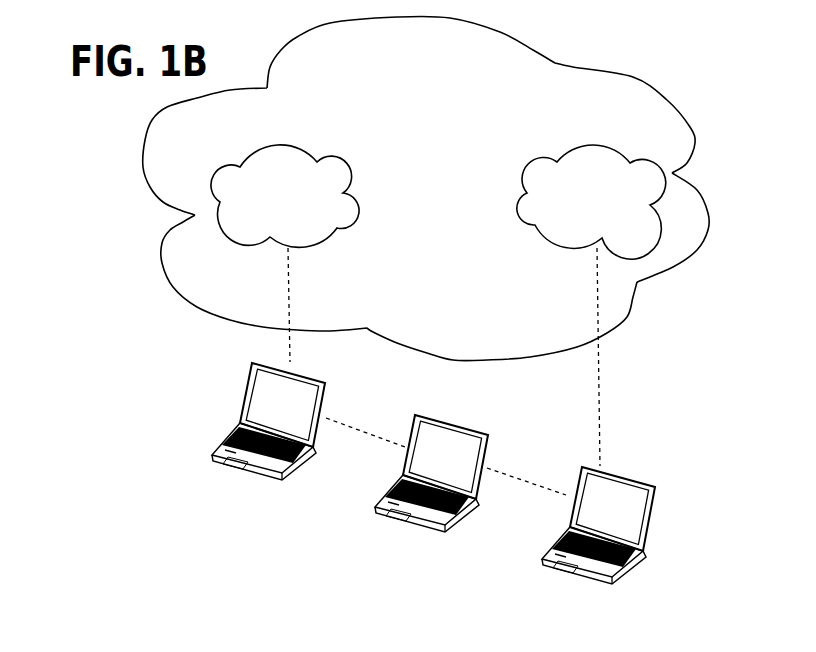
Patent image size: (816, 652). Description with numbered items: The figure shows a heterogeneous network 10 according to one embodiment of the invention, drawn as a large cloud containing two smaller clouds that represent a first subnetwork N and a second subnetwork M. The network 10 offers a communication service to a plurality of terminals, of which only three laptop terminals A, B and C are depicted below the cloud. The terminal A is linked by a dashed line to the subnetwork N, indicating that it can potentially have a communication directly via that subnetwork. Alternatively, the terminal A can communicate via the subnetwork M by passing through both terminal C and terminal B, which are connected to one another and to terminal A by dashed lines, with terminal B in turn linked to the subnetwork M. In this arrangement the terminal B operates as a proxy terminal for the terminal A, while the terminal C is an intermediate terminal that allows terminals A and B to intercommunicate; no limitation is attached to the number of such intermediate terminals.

The network 10 is at (652, 85).
The second subnetwork M is at (285, 196).
The first subnetwork N is at (591, 202).
The terminal A is at (625, 572).
The terminal B is at (248, 391).
The terminal C is at (460, 515).